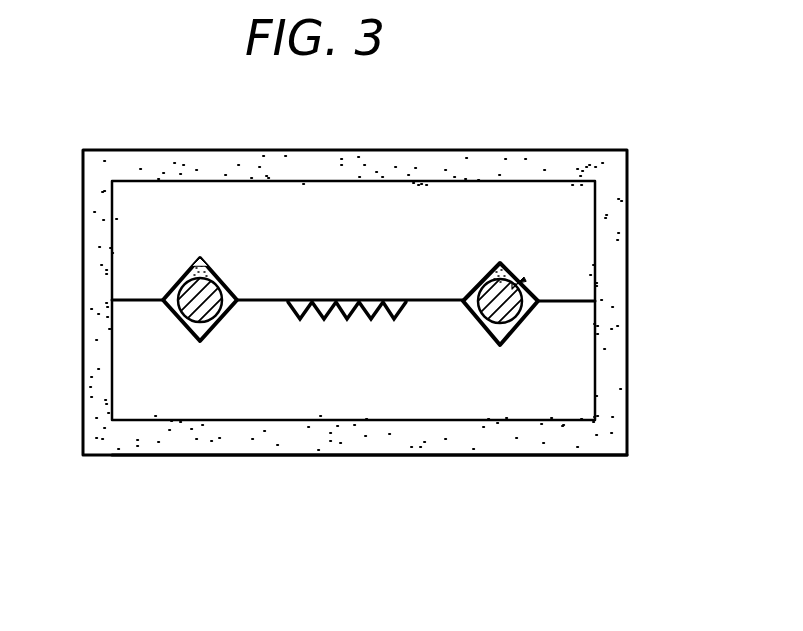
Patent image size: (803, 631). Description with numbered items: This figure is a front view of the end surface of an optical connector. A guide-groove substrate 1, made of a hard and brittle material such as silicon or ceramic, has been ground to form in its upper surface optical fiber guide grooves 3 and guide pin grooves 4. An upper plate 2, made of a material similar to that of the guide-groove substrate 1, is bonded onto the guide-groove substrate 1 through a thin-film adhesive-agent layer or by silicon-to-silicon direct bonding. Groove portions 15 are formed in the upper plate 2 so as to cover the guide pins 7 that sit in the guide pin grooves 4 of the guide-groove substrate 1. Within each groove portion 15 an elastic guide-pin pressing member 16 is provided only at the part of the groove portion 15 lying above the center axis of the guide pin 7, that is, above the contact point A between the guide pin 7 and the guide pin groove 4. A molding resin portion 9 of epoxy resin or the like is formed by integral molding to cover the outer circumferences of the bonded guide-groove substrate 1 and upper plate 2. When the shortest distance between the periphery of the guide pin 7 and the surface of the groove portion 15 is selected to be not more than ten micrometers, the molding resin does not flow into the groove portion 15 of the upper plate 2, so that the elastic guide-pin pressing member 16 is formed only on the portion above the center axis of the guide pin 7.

The guide-groove substrate 1 is at (505, 407).
The upper plate 2 is at (390, 197).
The optical fiber guide grooves 3 is at (360, 313).
The guide pin grooves 4 is at (146, 373).
The guide pin 7 is at (512, 330).
The molding resin portion 9 is at (365, 450).
The groove portion 15 is at (207, 258).
The elastic guide-pin pressing member 16 is at (519, 282).
The contact point A is at (185, 312).